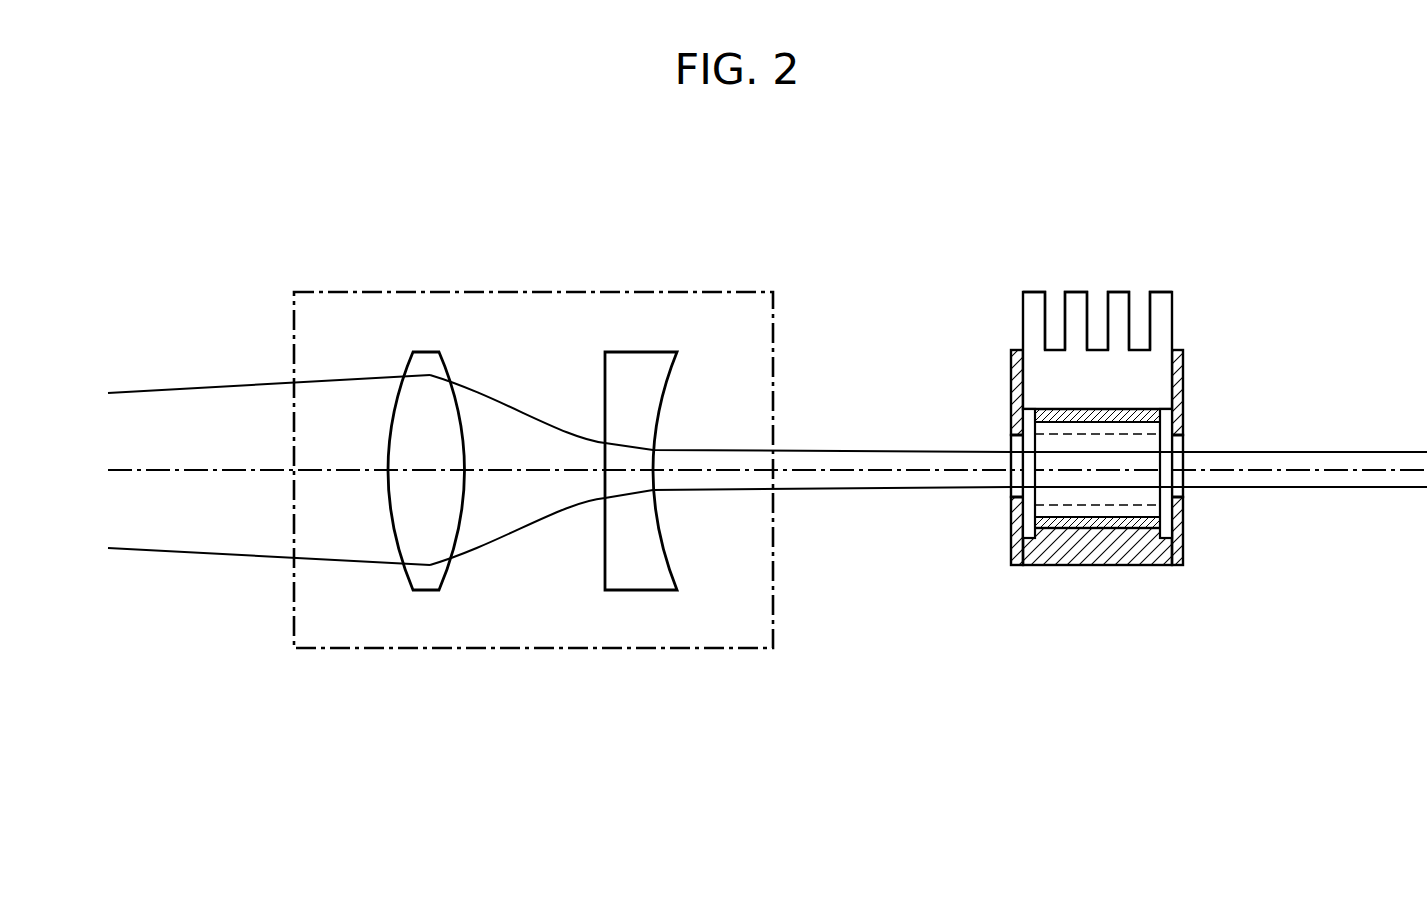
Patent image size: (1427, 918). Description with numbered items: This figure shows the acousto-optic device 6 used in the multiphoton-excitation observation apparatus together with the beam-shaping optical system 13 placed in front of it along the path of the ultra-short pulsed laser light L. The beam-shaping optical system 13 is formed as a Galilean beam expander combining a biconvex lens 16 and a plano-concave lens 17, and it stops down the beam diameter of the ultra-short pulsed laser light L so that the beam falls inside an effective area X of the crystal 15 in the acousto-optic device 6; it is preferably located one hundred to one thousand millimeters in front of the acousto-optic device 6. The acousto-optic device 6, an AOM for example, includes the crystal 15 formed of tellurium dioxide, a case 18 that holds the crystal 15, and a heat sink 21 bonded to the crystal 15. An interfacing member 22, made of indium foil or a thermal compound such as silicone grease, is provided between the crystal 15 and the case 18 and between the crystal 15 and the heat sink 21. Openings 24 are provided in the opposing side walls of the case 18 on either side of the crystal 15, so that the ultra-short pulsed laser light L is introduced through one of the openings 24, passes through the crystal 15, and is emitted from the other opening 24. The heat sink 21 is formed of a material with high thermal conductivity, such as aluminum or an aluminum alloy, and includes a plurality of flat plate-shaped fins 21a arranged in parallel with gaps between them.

The beam-shaping optical system 13 is at (742, 292).
The biconvex lens 16 is at (433, 351).
The plano-concave lens 17 is at (630, 351).
The acousto-optic device 6 is at (1114, 430).
The case 18 is at (1156, 555).
The heat sink 21 is at (1150, 378).
The fins 21a is at (1034, 298).
The interfacing member 22 is at (1062, 410).
The crystal 15 is at (1160, 440).
The effective area X is at (1063, 538).
The openings 24 is at (1010, 497).
The ultra-short pulsed laser light L is at (1325, 452).